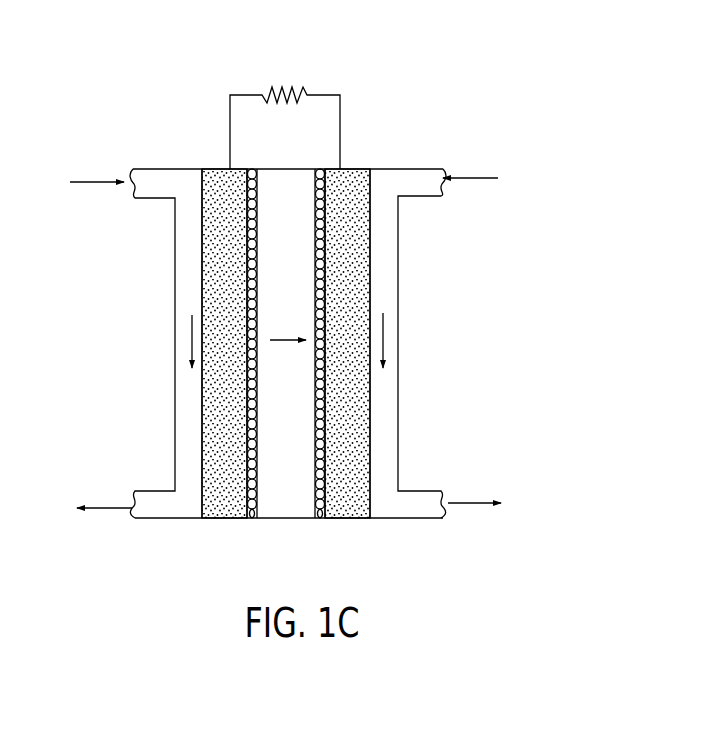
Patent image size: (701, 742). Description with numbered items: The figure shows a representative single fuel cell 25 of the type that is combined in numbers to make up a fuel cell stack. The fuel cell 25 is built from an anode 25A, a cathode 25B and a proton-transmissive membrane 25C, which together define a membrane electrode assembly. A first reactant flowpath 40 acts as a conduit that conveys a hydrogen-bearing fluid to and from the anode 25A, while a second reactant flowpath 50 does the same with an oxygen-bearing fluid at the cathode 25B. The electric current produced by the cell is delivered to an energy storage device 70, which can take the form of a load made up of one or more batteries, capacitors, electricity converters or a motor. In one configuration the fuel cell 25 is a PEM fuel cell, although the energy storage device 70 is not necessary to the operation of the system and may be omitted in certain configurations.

The fuel cell 25 is at (325, 305).
The anode 25A is at (202, 525).
The cathode 25B is at (325, 525).
The proton-transmissive membrane 25C is at (257, 525).
The first reactant flowpath 40 is at (180, 250).
The second reactant flowpath 50 is at (392, 247).
The energy storage device 70 is at (292, 86).